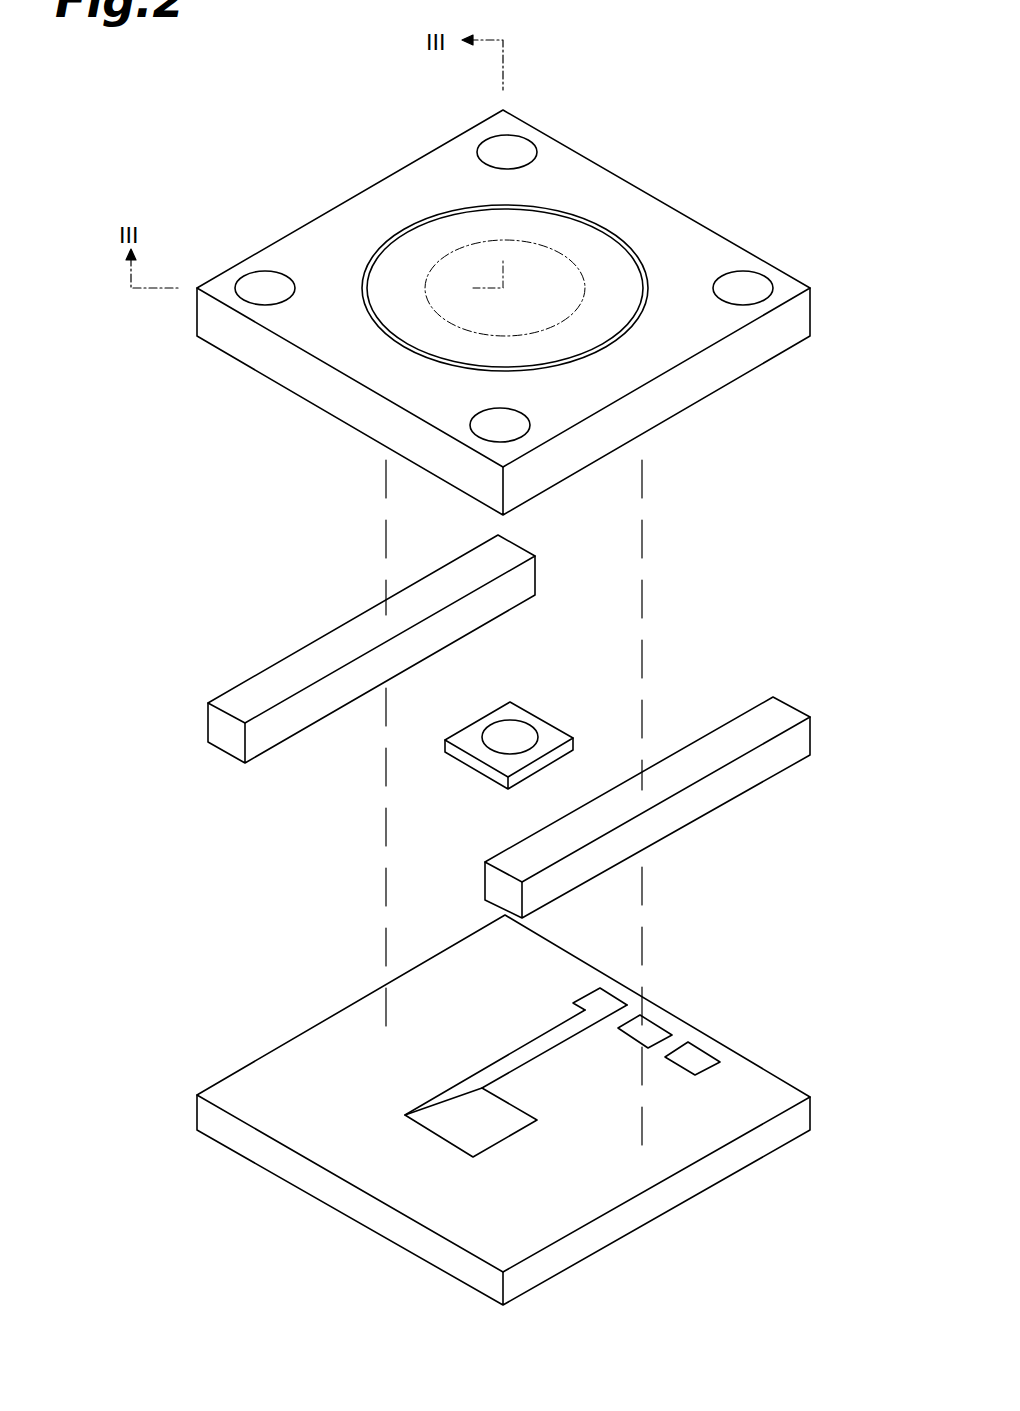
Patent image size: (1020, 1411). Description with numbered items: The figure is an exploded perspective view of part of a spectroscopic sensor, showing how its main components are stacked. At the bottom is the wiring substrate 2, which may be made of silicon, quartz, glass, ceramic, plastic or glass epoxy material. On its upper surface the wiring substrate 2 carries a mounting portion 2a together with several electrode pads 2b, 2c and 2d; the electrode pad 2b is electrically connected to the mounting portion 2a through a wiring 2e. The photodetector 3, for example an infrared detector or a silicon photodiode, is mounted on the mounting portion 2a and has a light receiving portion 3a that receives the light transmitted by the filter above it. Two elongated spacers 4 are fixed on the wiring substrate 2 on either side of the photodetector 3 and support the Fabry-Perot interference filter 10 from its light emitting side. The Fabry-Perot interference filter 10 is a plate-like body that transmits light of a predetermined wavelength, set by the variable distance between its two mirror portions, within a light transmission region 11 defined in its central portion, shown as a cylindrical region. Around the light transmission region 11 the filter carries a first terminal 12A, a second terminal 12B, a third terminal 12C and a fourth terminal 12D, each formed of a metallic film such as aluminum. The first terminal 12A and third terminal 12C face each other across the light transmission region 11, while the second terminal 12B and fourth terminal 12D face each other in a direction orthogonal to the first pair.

The wiring substrate 2 is at (753, 1083).
The mounting portion 2a is at (485, 1127).
The electrode pad 2b is at (612, 998).
The electrode pad 2c is at (655, 1030).
The electrode pad 2d is at (690, 1060).
The wiring 2e is at (540, 1045).
The photodetector 3 is at (555, 738).
The light receiving portion 3a is at (508, 730).
The spacer 4 is at (240, 700).
The Fabry-Perot interference filter 10 is at (643, 208).
The light transmission region 11 is at (427, 263).
The first terminal 12A is at (506, 150).
The second terminal 12B is at (740, 285).
The third terminal 12C is at (485, 425).
The fourth terminal 12D is at (265, 288).